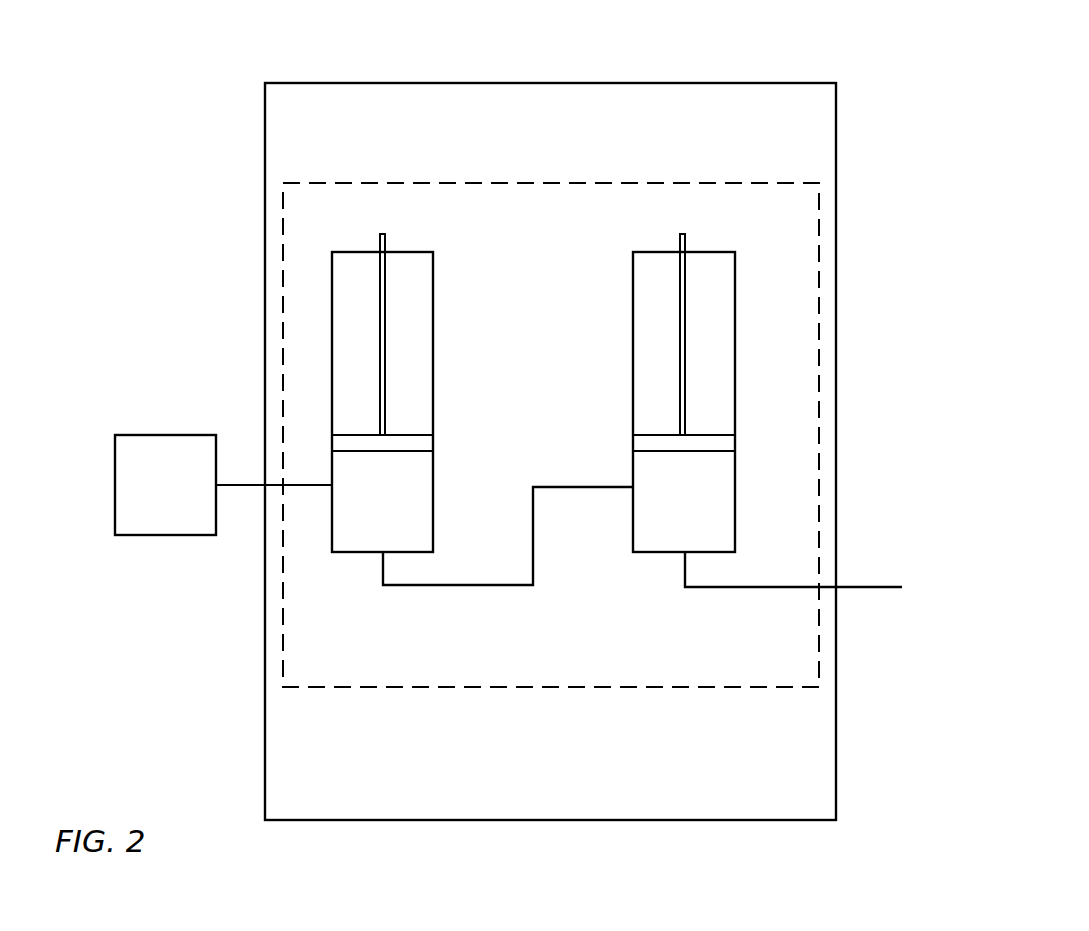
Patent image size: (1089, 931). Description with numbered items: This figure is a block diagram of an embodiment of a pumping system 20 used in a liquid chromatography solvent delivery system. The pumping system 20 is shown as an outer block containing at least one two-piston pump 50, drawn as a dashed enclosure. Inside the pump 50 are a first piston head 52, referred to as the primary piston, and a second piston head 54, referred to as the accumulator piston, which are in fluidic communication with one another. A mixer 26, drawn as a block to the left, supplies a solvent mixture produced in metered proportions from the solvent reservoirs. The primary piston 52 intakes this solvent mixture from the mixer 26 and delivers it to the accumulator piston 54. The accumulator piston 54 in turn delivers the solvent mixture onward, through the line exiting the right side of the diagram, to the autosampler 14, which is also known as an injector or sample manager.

The pumping system 20 is at (836, 83).
The two-piston pump 50 is at (544, 659).
The mixer 26 is at (179, 497).
The first piston head 52 is at (407, 263).
The second piston head 54 is at (707, 269).
The autosampler 14 is at (882, 587).